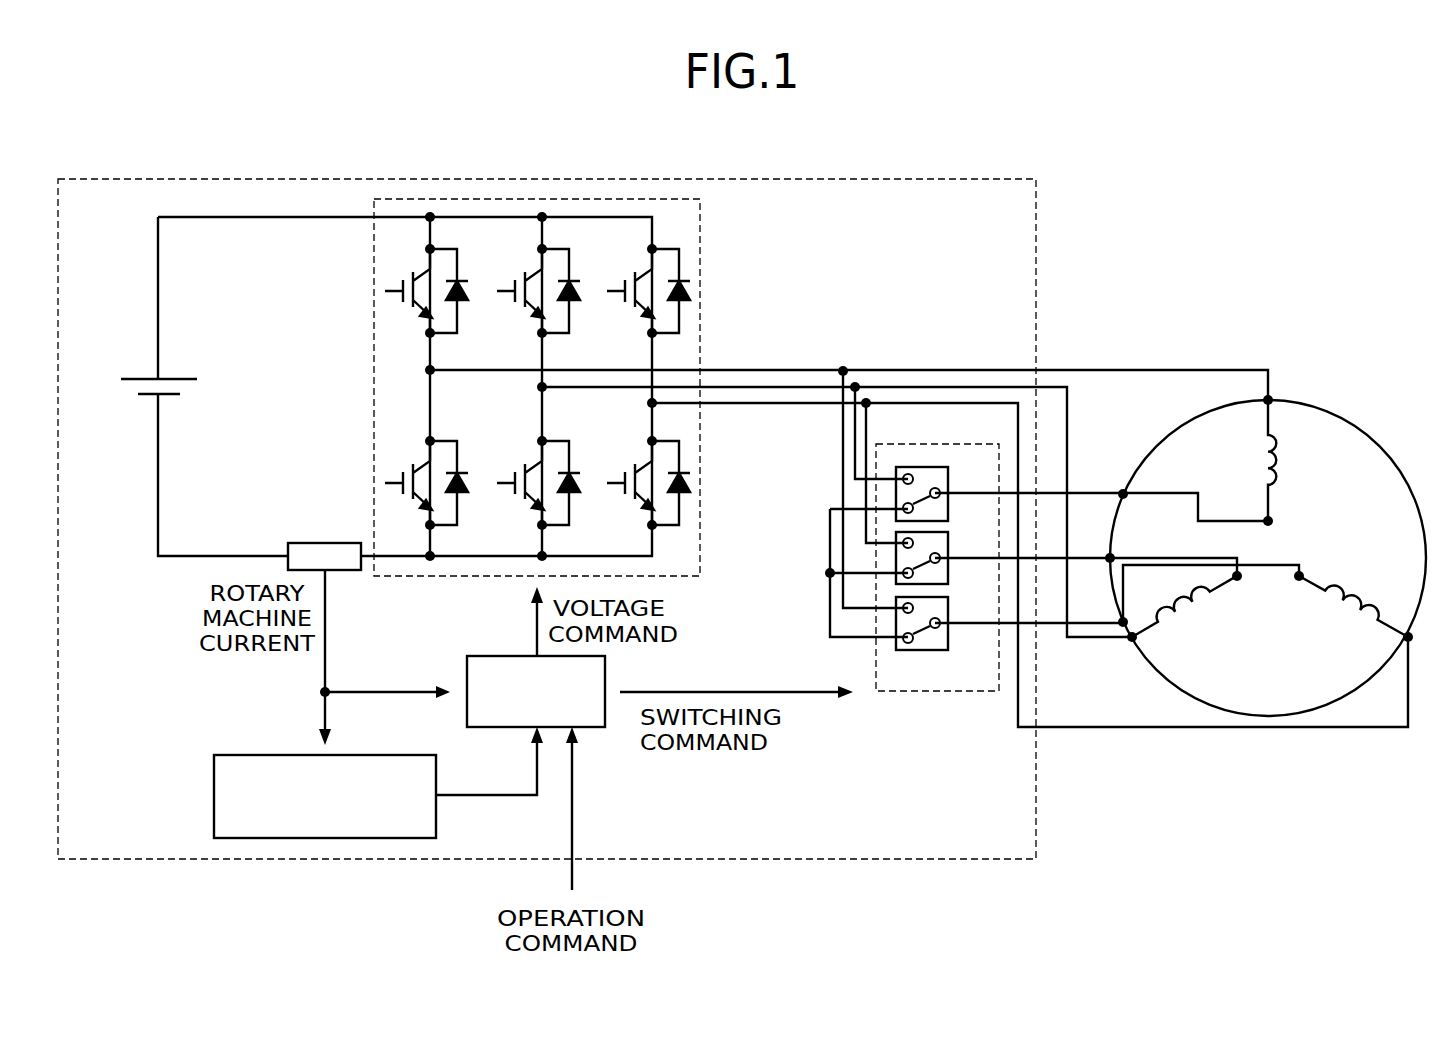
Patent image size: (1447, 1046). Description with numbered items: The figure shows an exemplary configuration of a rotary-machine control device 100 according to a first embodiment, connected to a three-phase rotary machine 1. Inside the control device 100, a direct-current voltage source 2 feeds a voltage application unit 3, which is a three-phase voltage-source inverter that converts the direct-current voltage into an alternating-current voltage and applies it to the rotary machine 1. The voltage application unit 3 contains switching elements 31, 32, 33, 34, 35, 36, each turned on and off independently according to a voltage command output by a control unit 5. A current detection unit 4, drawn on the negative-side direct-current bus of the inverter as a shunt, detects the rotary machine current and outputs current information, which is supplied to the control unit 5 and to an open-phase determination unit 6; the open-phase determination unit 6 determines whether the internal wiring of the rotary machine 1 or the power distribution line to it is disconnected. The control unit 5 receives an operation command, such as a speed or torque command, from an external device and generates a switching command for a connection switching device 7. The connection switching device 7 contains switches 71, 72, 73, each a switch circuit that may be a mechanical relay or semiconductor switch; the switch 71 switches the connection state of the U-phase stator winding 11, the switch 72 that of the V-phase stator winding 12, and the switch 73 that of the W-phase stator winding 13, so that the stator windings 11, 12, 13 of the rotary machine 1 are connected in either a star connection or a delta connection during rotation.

The rotary-machine control device 100 is at (1036, 203).
The rotary machine 1 is at (1345, 410).
The direct-current voltage source 2 is at (126, 390).
The voltage application unit 3 is at (700, 226).
The current detection unit 4 is at (325, 543).
The control unit 5 is at (605, 664).
The open-phase determination unit 6 is at (368, 755).
The connection switching device 7 is at (963, 444).
The U-phase stator winding 11 is at (1266, 452).
The V-phase stator winding 12 is at (1178, 614).
The W-phase stator winding 13 is at (1347, 588).
The switching element 31 is at (410, 262).
The switching element 32 is at (407, 508).
The switching element 33 is at (523, 262).
The switching element 34 is at (518, 508).
The switching element 35 is at (630, 262).
The switching element 36 is at (629, 508).
The switch 71 is at (950, 477).
The switch 72 is at (950, 542).
The switch 73 is at (950, 607).